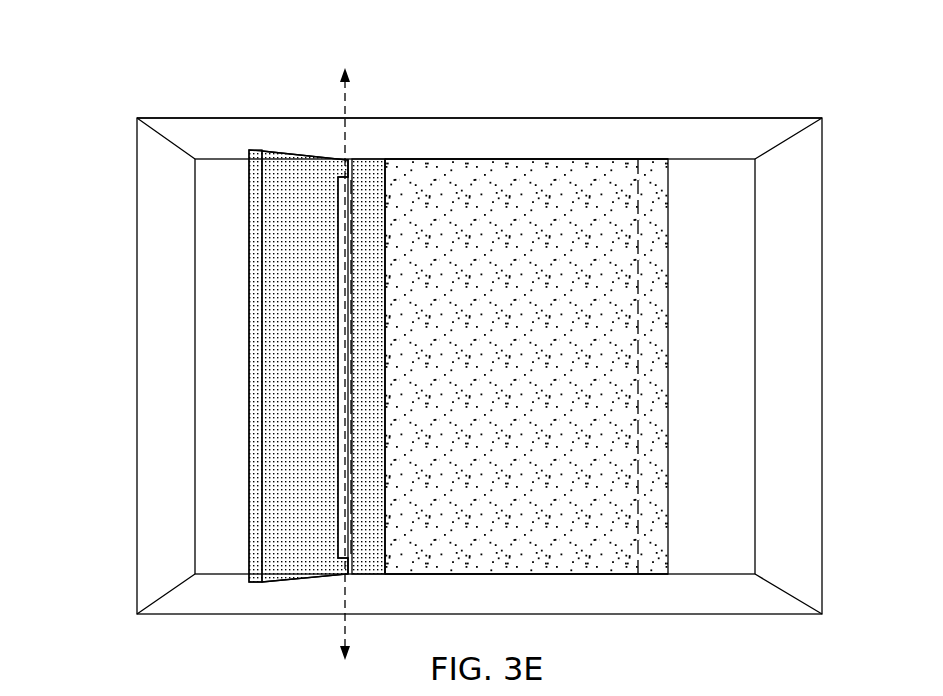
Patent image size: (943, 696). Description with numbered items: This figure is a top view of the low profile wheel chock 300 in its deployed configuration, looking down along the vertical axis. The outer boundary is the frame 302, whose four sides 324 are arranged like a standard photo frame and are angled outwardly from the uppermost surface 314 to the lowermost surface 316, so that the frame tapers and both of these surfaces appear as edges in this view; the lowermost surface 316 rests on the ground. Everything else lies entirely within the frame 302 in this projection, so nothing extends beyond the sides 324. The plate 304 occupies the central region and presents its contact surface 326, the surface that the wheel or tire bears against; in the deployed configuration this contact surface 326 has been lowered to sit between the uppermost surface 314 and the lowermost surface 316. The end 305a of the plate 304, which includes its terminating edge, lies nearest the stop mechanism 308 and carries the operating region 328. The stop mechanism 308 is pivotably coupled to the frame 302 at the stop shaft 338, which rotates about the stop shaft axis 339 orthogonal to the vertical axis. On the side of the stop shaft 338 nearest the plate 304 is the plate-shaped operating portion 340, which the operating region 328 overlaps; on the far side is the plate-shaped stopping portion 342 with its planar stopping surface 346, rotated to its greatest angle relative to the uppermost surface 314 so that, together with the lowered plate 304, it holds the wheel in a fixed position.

The low profile wheel chock 300 is at (138, 66).
The frame 302 is at (805, 268).
The plate 304 is at (500, 175).
The end of the plate 305a is at (427, 243).
The stop mechanism 308 is at (282, 100).
The uppermost surface 314 is at (588, 160).
The lowermost surface 316 is at (762, 116).
The sides 324 is at (543, 138).
The contact surface 326 is at (525, 386).
The operating region 328 is at (453, 262).
The stop shaft 338 is at (351, 530).
The stop shaft axis 339 is at (345, 627).
The operating portion 340 is at (371, 176).
The stopping portion 342 is at (247, 265).
The stopping surface 346 is at (320, 392).